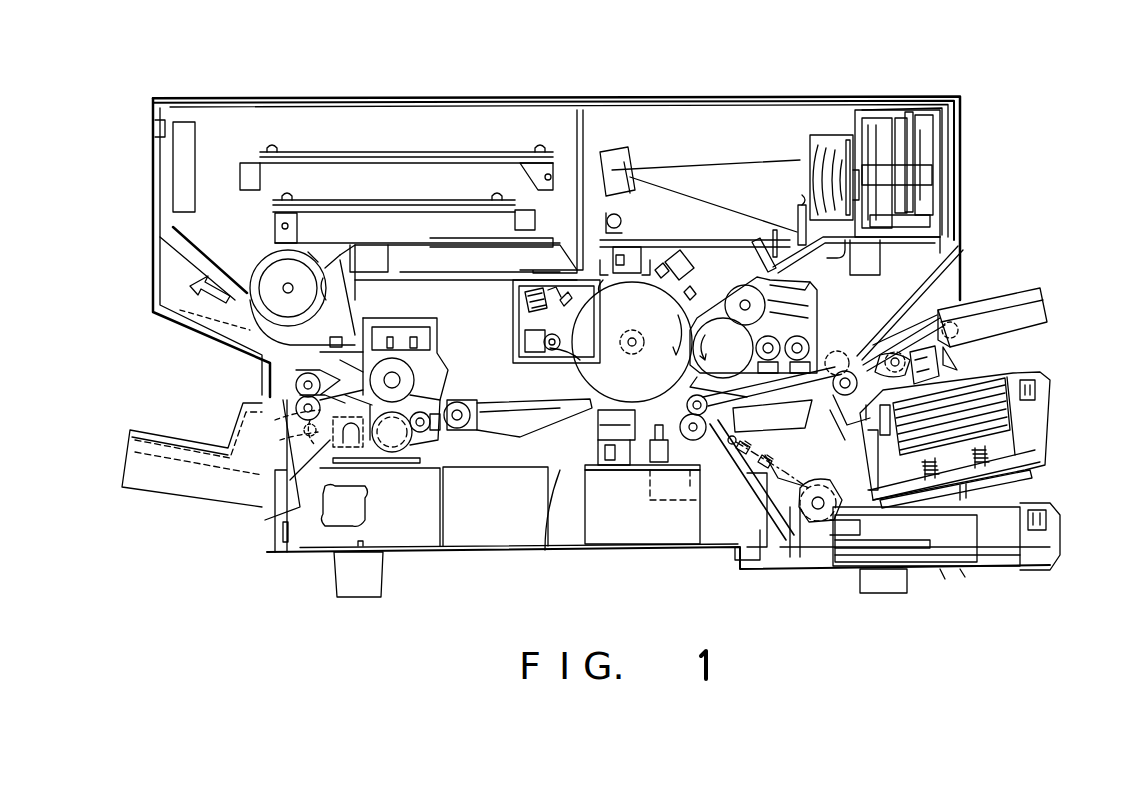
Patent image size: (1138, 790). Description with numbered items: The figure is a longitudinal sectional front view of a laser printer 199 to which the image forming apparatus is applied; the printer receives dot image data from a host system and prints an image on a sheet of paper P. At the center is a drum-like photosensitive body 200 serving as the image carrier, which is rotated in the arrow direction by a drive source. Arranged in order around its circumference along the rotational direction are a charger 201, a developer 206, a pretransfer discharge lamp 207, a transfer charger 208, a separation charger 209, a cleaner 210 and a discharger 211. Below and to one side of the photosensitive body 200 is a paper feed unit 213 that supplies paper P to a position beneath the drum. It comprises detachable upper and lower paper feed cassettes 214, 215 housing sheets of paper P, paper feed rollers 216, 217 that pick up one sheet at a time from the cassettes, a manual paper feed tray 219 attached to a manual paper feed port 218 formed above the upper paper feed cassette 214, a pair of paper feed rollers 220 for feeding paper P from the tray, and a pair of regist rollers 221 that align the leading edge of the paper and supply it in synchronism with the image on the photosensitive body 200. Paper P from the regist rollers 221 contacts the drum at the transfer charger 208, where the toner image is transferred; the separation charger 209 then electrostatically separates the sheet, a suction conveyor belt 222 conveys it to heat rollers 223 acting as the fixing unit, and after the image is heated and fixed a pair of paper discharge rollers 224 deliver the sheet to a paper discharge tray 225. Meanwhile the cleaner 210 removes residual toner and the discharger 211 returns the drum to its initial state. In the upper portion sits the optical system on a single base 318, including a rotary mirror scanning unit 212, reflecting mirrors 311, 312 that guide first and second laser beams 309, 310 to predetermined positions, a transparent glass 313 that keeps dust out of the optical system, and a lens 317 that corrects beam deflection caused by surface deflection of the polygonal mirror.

The laser printer 199 is at (740, 82).
The photosensitive body 200 is at (590, 357).
The charger 201 is at (680, 255).
The developer 206 is at (816, 298).
The pretransfer discharge lamp 207 is at (668, 393).
The transfer charger 208 is at (637, 455).
The separation charger 209 is at (600, 440).
The cleaner 210 is at (517, 305).
The discharger 211 is at (628, 218).
The rotary mirror scanning unit 212 is at (951, 169).
The paper feed unit 213 is at (1021, 490).
The upper paper feed cassette 214 is at (1045, 456).
The lower paper feed cassette 215 is at (1056, 534).
The paper feed roller 216 is at (826, 425).
The paper feed roller 217 is at (815, 522).
The manual paper feed port 218 is at (962, 270).
The manual paper feed tray 219 is at (1022, 290).
The paper feed rollers 220 is at (948, 364).
The regist rollers 221 is at (692, 440).
The suction conveyor belt 222 is at (525, 410).
The heat rollers 223 is at (327, 437).
The paper discharge rollers 224 is at (280, 395).
The paper discharge tray 225 is at (160, 430).
The first laser beam 309 is at (710, 177).
The second laser beam 310 is at (848, 177).
The reflecting mirror 311 is at (633, 172).
The reflecting mirror 312 is at (808, 205).
The transparent glass 313 is at (775, 240).
The lens 317 is at (690, 292).
The single base 318 is at (830, 246).
The paper P is at (1037, 415).